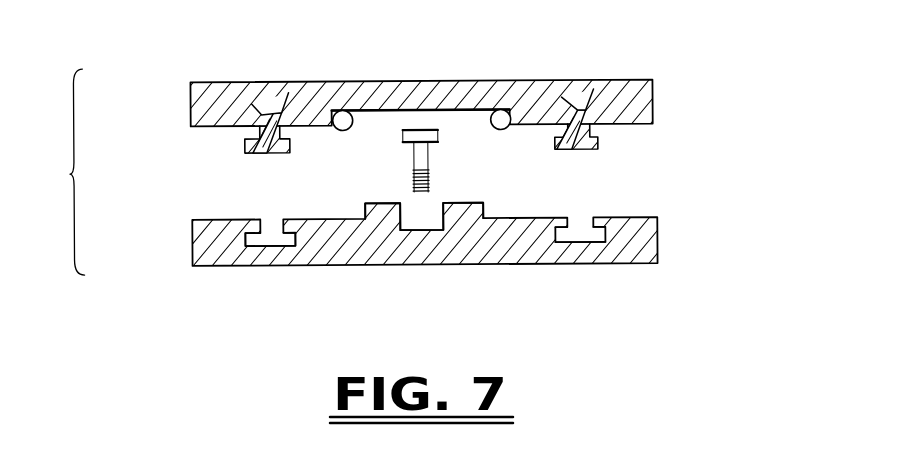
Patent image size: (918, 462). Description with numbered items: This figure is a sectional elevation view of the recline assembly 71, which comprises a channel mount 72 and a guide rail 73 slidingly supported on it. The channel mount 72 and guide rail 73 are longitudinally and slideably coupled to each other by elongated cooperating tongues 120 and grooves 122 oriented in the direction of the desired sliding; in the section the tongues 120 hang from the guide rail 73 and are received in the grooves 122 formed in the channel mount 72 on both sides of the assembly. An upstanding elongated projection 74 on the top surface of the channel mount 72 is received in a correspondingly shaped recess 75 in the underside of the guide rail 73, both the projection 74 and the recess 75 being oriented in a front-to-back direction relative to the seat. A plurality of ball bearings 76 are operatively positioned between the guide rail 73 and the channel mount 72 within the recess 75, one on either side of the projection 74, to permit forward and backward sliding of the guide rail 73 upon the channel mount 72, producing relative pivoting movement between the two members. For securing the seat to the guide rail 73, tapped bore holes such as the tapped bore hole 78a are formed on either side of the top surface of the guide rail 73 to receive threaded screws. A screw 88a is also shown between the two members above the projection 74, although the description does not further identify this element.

The recline assembly 71 is at (65, 172).
The channel mount 72 is at (402, 268).
The guide rail 73 is at (386, 79).
The upstanding elongated projection 74 is at (460, 203).
The recess 75 is at (403, 111).
The ball bearings 76 is at (345, 130).
The tapped bore hole 78a is at (276, 95).
The screw 88a is at (422, 153).
The tongues 120 is at (248, 158).
The grooves 122 is at (270, 230).